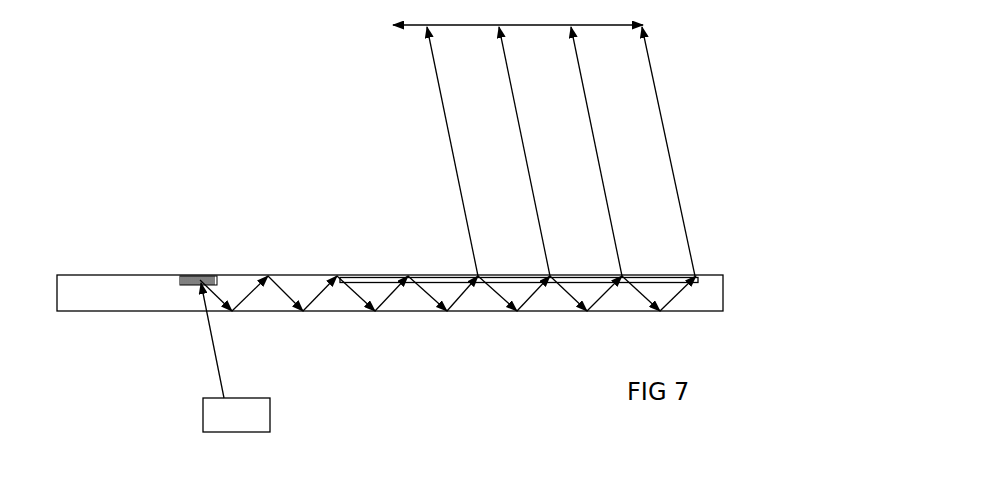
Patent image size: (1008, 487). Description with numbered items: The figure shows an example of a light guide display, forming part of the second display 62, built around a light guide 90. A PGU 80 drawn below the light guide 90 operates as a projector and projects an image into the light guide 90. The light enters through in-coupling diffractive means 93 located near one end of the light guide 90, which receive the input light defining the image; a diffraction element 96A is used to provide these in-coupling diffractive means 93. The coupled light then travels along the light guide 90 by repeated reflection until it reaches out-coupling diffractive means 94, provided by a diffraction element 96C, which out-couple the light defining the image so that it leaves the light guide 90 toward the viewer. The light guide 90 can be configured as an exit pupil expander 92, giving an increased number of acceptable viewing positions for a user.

The second display 62 is at (157, 82).
The light guide 90 is at (72, 277).
The in-coupling diffractive means 93 is at (192, 275).
The diffraction element 96A is at (212, 275).
The out-coupling diffractive means 94 is at (452, 275).
The diffraction element 96C is at (629, 275).
The exit pupil expander 92 is at (175, 332).
The PGU 80 is at (213, 425).